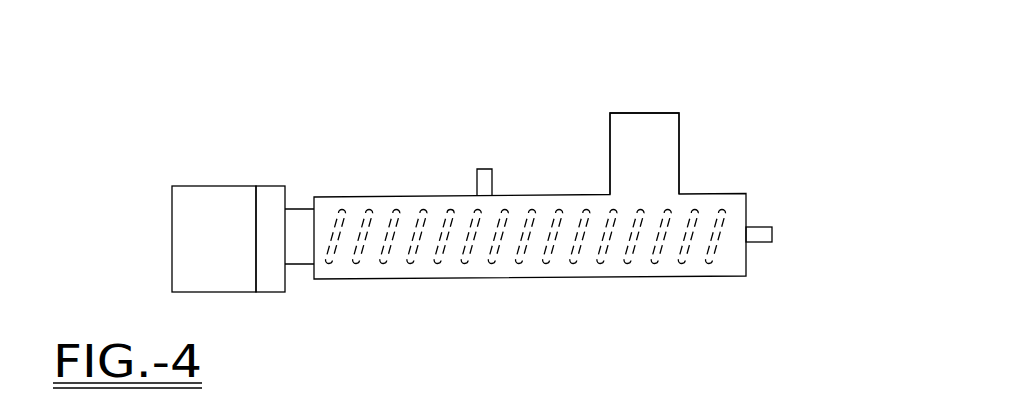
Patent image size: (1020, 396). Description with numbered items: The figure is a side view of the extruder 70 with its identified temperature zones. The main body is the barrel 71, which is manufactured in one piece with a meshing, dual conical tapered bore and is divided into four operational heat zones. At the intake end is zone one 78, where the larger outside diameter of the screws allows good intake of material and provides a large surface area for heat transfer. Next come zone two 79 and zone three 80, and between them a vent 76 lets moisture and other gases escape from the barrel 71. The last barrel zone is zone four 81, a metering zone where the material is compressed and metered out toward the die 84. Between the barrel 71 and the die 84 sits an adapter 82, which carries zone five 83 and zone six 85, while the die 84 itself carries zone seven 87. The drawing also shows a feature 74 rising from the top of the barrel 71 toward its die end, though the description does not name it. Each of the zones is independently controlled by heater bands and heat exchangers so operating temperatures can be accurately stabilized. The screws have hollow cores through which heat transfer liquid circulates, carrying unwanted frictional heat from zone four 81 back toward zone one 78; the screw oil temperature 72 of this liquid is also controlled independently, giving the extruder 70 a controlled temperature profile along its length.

The extruder 70 is at (470, 180).
The barrel 71 is at (594, 197).
The screw oil temperature 72 is at (772, 232).
The inlet reservoir 74 is at (630, 113).
The vent 76 is at (483, 170).
The zone 1 78 is at (565, 252).
The zone two 79 is at (510, 252).
The zone three 80 is at (428, 252).
The zone 4 81 is at (375, 252).
The adapter 82 is at (272, 186).
The zone 5 83 is at (298, 247).
The die 84 is at (203, 187).
The zone 6 85 is at (273, 263).
The zone 7 87 is at (193, 236).